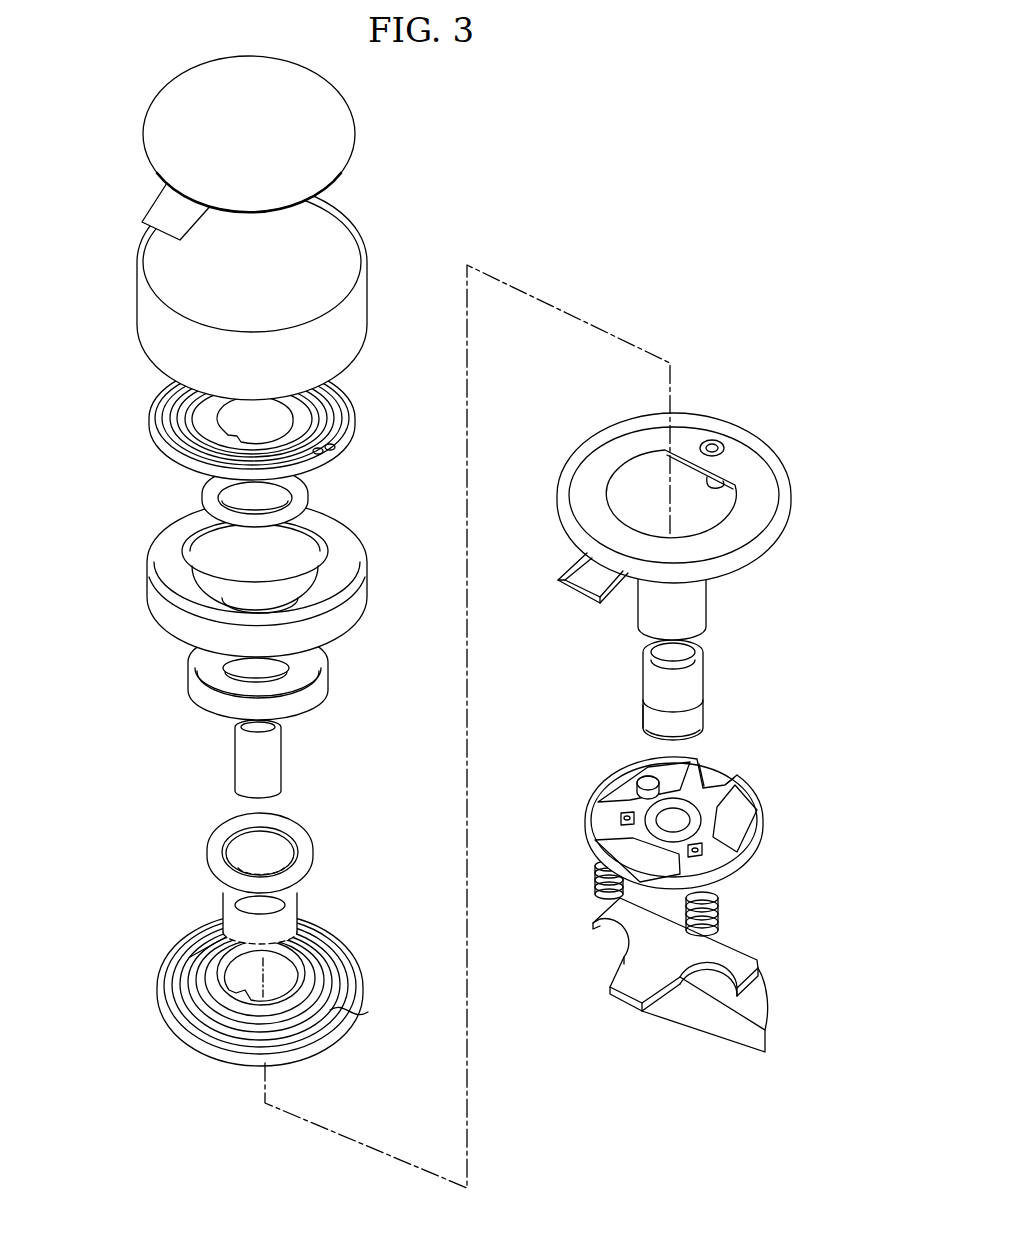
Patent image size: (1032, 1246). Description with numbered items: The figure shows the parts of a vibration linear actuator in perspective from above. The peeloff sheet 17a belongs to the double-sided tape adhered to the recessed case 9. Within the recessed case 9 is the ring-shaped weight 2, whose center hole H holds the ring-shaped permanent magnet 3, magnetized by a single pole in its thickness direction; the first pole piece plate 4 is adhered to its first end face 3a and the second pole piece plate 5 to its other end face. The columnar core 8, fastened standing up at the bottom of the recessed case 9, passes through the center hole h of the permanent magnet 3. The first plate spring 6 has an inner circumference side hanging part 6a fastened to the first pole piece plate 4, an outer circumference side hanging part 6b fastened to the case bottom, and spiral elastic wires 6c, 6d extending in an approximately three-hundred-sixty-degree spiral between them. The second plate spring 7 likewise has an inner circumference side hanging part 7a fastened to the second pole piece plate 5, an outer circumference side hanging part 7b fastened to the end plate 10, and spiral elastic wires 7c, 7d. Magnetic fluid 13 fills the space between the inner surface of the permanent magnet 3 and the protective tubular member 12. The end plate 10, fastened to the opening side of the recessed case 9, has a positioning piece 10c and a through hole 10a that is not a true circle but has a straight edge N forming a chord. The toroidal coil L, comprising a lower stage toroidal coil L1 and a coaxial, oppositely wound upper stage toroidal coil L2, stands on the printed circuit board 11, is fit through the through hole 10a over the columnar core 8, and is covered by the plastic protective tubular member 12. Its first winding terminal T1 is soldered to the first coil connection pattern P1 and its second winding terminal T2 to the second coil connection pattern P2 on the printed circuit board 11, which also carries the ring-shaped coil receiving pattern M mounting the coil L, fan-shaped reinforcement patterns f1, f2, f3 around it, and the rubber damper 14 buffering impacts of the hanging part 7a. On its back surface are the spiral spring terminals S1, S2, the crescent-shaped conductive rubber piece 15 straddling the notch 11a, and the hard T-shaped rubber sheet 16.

The peeloff sheet 17a is at (168, 115).
The recessed case 9 is at (138, 298).
The first plate spring 6 is at (243, 395).
The inner circumference side hanging part 6a is at (300, 407).
The outer circumference side hanging part 6b is at (340, 432).
The spiral elastic wire 6c is at (173, 413).
The spiral elastic wire 6d is at (295, 420).
The first pole piece plate 4 is at (207, 480).
The center hole H is at (297, 540).
The ring-shaped weight 2 is at (245, 567).
The ring-shaped permanent magnet 3 is at (247, 706).
The first end face 3a is at (233, 683).
The center hole h is at (267, 670).
The columnar core 8 is at (275, 763).
The second pole piece plate 5 is at (312, 843).
The magnetic fluid 13 is at (223, 907).
The second plate spring 7 is at (250, 1004).
The inner circumference side hanging part 7a is at (297, 953).
The outer circumference side hanging part 7b is at (340, 1033).
The spiral elastic wire 7c is at (223, 1028).
The spiral elastic wire 7d is at (345, 973).
The end plate 10 is at (680, 517).
The through hole 10a is at (638, 480).
The positioning piece 10c is at (583, 585).
The straight edge N is at (727, 477).
The protective tubular member 12 is at (698, 600).
The toroidal coil L is at (712, 701).
The lower stage toroidal coil L1 is at (703, 713).
The upper stage toroidal coil L2 is at (703, 677).
The first winding terminal T1 is at (701, 746).
The second winding terminal T2 is at (643, 717).
The printed circuit board 11 is at (690, 797).
The notch 11a is at (725, 782).
The rubber damper 14 is at (640, 783).
The coil receiving pattern M is at (692, 828).
The fan-shaped reinforcement pattern f1 is at (745, 803).
The fan-shaped reinforcement pattern f2 is at (670, 768).
The fan-shaped reinforcement pattern f3 is at (610, 843).
The first coil connection pattern P1 is at (697, 852).
The second coil connection pattern P2 is at (621, 818).
The spiral spring terminal S1 is at (723, 907).
The spiral spring terminal S2 is at (593, 873).
The crescent-shaped conductive rubber piece 15 is at (680, 1009).
The rubber sheet 16 is at (632, 1003).